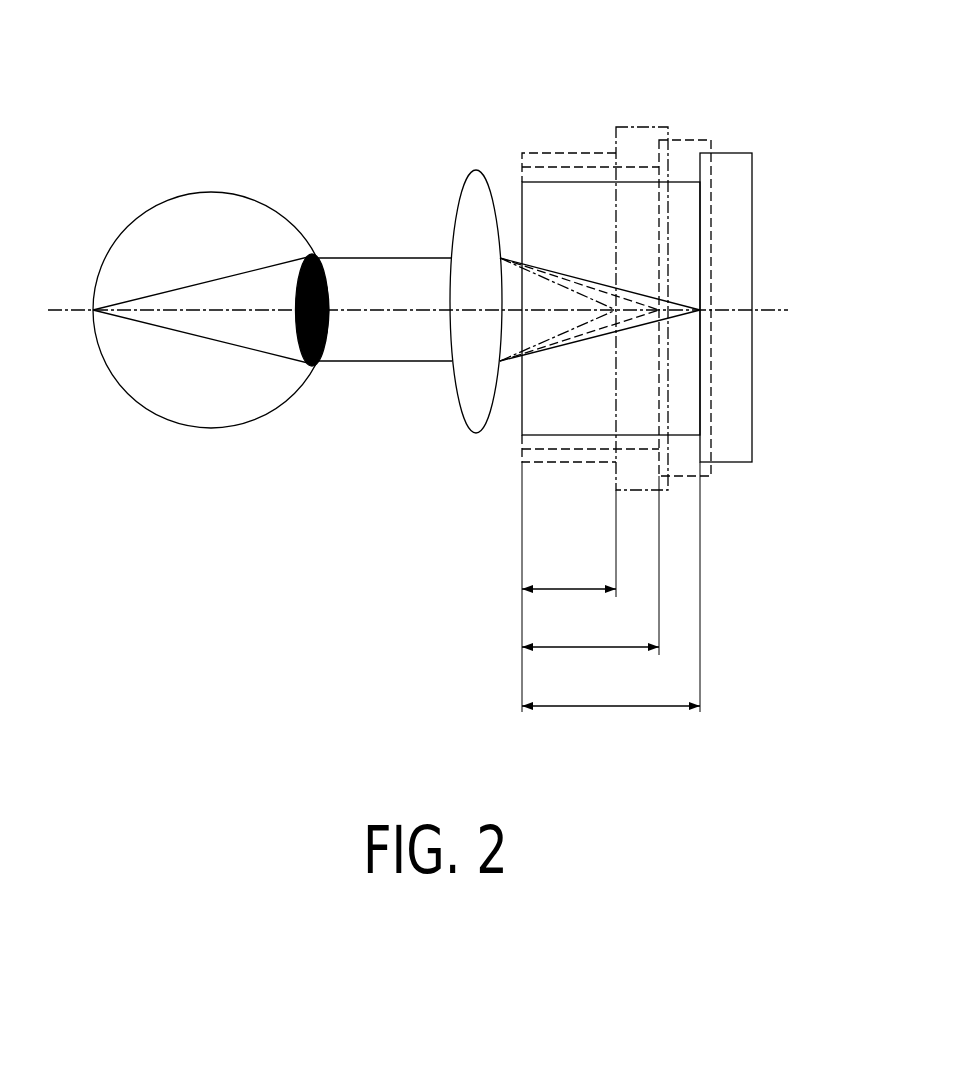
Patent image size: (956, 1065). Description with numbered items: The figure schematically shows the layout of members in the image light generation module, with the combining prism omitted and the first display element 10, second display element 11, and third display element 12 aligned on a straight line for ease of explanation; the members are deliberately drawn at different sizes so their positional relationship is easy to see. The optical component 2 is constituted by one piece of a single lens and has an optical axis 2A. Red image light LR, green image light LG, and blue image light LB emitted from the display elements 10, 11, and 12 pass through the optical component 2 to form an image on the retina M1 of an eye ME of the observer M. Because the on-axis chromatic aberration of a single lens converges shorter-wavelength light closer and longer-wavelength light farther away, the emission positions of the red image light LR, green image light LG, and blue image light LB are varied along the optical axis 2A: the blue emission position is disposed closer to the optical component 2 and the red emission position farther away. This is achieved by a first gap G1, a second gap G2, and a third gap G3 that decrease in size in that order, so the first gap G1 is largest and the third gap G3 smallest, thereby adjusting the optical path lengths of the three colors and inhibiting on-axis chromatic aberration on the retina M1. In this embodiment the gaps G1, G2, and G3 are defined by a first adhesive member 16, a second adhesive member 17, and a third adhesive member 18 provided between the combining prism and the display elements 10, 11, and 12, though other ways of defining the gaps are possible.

The optical component 2 is at (458, 403).
The optical axis 2A is at (57, 315).
The observer M is at (211, 251).
The eye ME is at (198, 186).
The retina M1 is at (97, 333).
The first display element 10 is at (748, 153).
The second display element 11 is at (683, 140).
The third display element 12 is at (627, 127).
The first adhesive member 16 is at (682, 181).
The second adhesive member 17 is at (638, 167).
The third adhesive member 18 is at (568, 153).
The red image light LR is at (670, 313).
The green image light LG is at (627, 323).
The blue image light LB is at (582, 325).
The first gap G1 is at (611, 587).
The second gap G2 is at (590, 565).
The third gap G3 is at (569, 543).